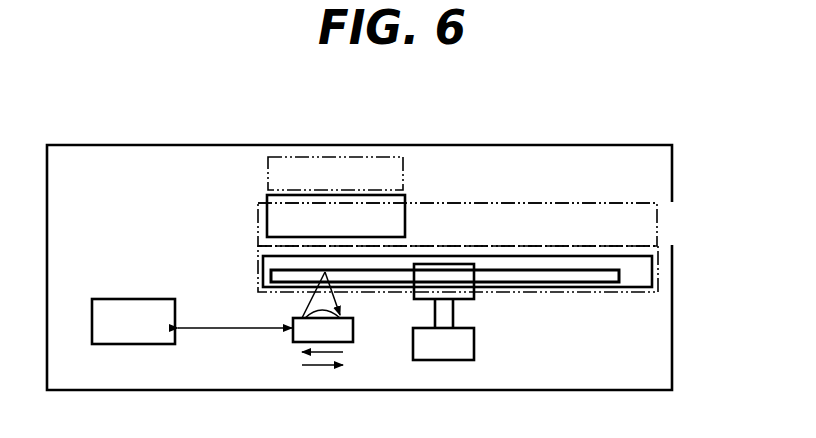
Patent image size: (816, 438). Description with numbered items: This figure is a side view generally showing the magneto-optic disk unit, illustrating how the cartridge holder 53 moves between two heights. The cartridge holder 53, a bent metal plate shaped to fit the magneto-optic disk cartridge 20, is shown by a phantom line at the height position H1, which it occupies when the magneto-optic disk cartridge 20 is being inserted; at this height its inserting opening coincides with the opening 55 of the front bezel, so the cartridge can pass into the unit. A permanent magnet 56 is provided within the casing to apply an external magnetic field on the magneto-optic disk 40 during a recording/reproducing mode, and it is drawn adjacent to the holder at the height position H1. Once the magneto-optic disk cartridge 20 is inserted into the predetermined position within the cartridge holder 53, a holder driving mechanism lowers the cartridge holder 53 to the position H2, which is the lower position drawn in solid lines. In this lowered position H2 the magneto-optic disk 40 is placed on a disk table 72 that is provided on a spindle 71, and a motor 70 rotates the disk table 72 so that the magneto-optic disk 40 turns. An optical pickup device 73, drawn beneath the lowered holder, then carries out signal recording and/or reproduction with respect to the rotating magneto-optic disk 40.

The magneto-optic disk cartridge 20 is at (653, 272).
The magneto-optic disk 40 is at (603, 273).
The cartridge holder 53 is at (543, 203).
The opening 55 is at (660, 227).
The permanent magnet 56 is at (400, 222).
The motor 70 is at (425, 342).
The spindle 71 is at (445, 315).
The disk table 72 is at (460, 282).
The optical pickup device 73 is at (302, 335).
The height position H1 is at (247, 224).
The position H2 is at (247, 278).